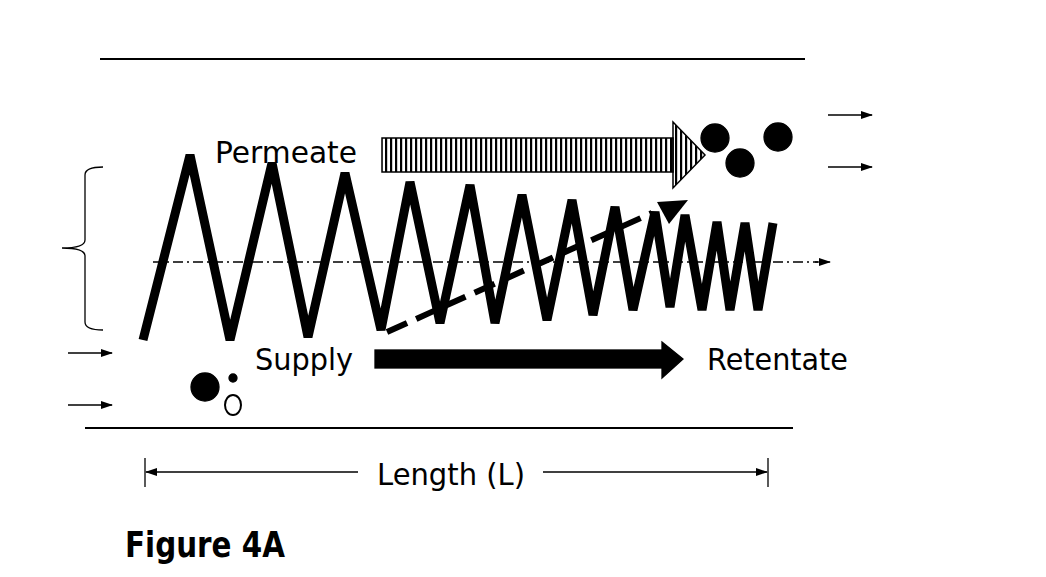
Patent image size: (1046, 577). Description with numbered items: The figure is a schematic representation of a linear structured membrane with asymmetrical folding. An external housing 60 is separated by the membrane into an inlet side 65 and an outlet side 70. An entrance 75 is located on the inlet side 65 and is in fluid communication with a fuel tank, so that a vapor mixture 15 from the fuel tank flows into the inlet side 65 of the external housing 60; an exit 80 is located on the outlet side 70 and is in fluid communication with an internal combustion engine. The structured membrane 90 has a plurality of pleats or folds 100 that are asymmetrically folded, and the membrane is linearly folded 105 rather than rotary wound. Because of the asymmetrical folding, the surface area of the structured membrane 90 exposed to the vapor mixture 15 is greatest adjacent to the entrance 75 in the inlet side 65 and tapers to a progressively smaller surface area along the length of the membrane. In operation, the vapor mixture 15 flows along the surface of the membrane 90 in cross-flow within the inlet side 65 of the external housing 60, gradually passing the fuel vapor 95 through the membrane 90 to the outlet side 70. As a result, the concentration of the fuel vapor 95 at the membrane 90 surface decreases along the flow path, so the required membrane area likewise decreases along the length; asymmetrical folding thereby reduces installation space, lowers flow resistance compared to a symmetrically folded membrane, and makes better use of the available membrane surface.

The vapor mixture 15 is at (227, 380).
The external housing 60 is at (533, 59).
The inlet side 65 is at (573, 400).
The outlet side 70 is at (557, 107).
The entrance 75 is at (70, 379).
The exit 80 is at (870, 141).
The structured membrane 90 is at (57, 248).
The fuel vapor 95 is at (747, 138).
The pleats or folds 100 is at (176, 197).
The linearly folded 105 is at (525, 262).